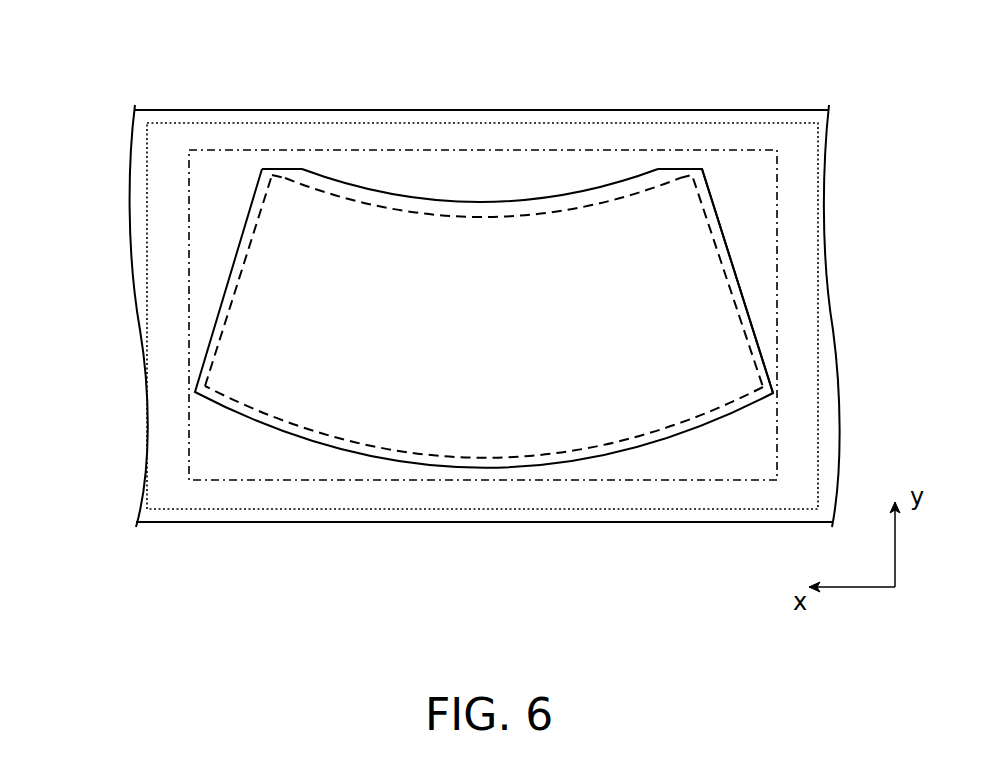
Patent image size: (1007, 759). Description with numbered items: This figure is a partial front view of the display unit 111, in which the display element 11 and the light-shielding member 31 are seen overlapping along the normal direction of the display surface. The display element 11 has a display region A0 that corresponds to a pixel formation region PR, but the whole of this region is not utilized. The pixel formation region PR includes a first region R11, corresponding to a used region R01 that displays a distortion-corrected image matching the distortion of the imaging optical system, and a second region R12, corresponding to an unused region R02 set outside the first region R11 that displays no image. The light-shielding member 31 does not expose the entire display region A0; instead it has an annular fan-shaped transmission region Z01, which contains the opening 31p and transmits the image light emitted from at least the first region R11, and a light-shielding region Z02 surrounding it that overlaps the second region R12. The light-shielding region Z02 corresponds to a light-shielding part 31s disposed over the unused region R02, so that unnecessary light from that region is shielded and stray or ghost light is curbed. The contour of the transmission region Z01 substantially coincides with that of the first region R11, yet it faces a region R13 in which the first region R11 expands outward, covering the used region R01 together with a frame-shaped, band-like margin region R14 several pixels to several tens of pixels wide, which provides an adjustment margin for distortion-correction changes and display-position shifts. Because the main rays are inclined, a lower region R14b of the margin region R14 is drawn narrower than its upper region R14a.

The display unit 111 is at (515, 264).
The light-shielding member 31 is at (535, 110).
The display element 11 is at (645, 123).
The display region A0 is at (483, 258).
The pixel formation region PR is at (428, 145).
The light-shielding region Z02 is at (483, 332).
The light-shielding part 31s is at (483, 338).
The opening 31p is at (405, 332).
The transmission region Z01 is at (488, 329).
The margin region R14 is at (597, 200).
The region in which the first region expands outward R13 is at (316, 172).
The first region R11 is at (796, 281).
The used region R01 is at (727, 282).
The second region R12 is at (569, 269).
The unused region R02 is at (713, 233).
The upper region R14a is at (483, 215).
The lower region R14b is at (465, 460).